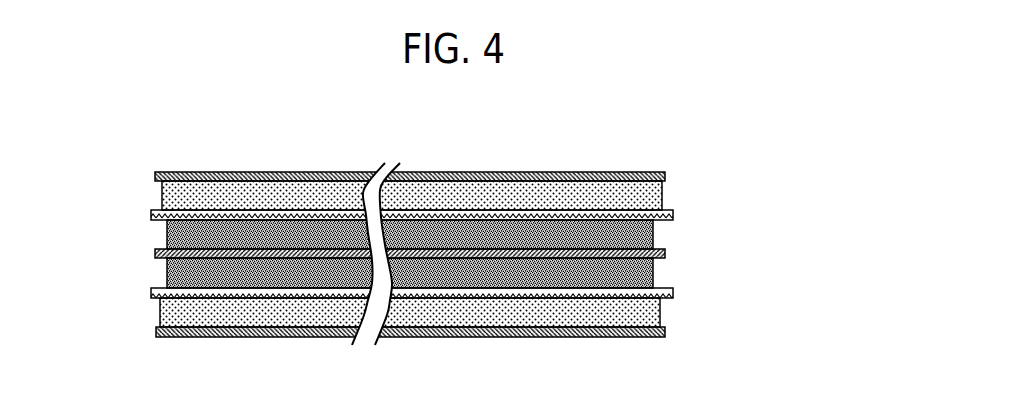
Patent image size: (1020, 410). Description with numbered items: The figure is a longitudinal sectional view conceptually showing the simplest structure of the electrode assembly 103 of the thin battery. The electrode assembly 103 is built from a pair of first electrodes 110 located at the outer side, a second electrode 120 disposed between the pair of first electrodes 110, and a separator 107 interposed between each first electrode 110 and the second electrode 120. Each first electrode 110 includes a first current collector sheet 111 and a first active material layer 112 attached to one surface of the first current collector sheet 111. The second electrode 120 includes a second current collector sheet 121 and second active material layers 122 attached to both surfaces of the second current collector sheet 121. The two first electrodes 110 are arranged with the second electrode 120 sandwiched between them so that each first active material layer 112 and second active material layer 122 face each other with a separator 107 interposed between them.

The electrode assembly 103 is at (438, 244).
The separator 107 is at (150, 214).
The first electrode 110 is at (486, 250).
The first current collector sheet 111 is at (655, 173).
The first active material layer 112 is at (647, 197).
The second electrode 120 is at (484, 258).
The second current collector sheet 121 is at (663, 254).
The second active material layer 122 is at (643, 237).